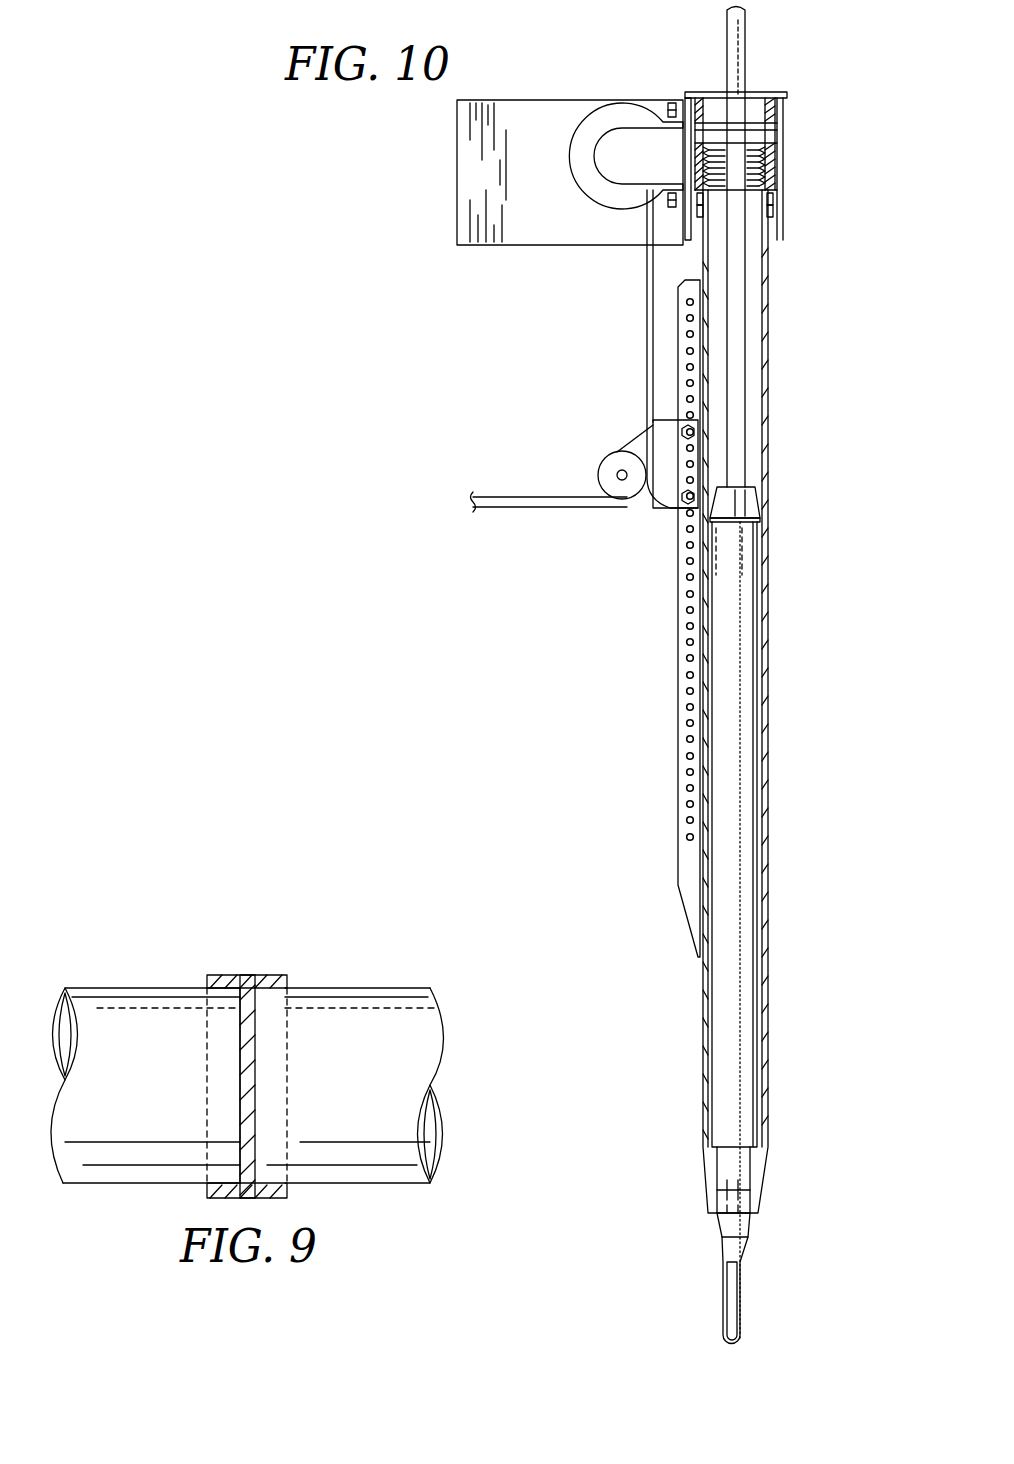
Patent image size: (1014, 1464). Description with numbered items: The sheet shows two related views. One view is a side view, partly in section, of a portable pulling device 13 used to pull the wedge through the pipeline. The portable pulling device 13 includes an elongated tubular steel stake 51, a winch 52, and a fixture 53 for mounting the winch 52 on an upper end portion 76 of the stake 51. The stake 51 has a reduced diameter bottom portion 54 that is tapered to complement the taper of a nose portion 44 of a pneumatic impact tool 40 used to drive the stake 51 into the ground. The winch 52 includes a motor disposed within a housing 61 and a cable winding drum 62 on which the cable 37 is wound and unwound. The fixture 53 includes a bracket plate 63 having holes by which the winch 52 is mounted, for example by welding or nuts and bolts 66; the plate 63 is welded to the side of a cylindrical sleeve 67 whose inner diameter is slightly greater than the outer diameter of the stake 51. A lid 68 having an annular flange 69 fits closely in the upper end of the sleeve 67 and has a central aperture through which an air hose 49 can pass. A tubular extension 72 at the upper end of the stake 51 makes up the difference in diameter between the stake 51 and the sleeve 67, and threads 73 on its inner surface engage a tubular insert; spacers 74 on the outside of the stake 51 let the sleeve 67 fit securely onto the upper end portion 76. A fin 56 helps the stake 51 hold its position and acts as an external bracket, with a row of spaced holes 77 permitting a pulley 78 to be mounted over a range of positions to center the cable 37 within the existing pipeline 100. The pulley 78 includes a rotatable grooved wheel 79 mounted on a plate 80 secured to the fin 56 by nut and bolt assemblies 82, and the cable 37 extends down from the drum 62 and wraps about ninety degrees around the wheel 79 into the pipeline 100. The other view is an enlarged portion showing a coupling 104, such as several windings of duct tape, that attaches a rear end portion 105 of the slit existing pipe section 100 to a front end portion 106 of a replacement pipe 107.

In FIG. 10, the portable pulling device 13 is at (627, 66).
In FIG. 10, the cable 37 is at (513, 508).
In FIG. 10, the pneumatic impact tool 40 is at (745, 762).
In FIG. 10, the nose portion 44 is at (748, 1163).
In FIG. 10, the air hose 49 is at (748, 26).
In FIG. 10, the tubular steel stake 51 is at (768, 668).
In FIG. 10, the winch 52 is at (545, 100).
In FIG. 10, the fixture 53 is at (852, 150).
In FIG. 10, the bottom portion 54 is at (705, 1175).
In FIG. 10, the fin 56 is at (680, 757).
In FIG. 10, the housing 61 is at (457, 170).
In FIG. 10, the cable winding drum 62 is at (580, 160).
In FIG. 10, the bracket plate 63 is at (683, 148).
In FIG. 10, the nuts and bolts 66 is at (672, 104).
In FIG. 10, the cylindrical sleeve 67 is at (785, 126).
In FIG. 10, the lid 68 is at (690, 92).
In FIG. 10, the annular flange 69 is at (755, 105).
In FIG. 10, the tubular extension 72 is at (775, 155).
In FIG. 10, the threads 73 is at (780, 185).
In FIG. 10, the spacers 74 is at (776, 205).
In FIG. 10, the upper end portion 76 is at (752, 225).
In FIG. 10, the spaced holes 77 is at (686, 643).
In FIG. 10, the pulley 78 is at (616, 516).
In FIG. 10, the rotatable grooved wheel 79 is at (605, 470).
In FIG. 10, the plate 80 is at (634, 434).
In FIG. 10, the nut and bolt assemblies 82 is at (690, 440).
In FIG. 9, the existing pipeline 100 is at (135, 985).
In FIG. 9, the coupling 104 is at (252, 975).
In FIG. 9, the rear end portion 105 is at (240, 1098).
In FIG. 9, the front end portion 106 is at (255, 1080).
In FIG. 9, the replacement pipe 107 is at (390, 985).